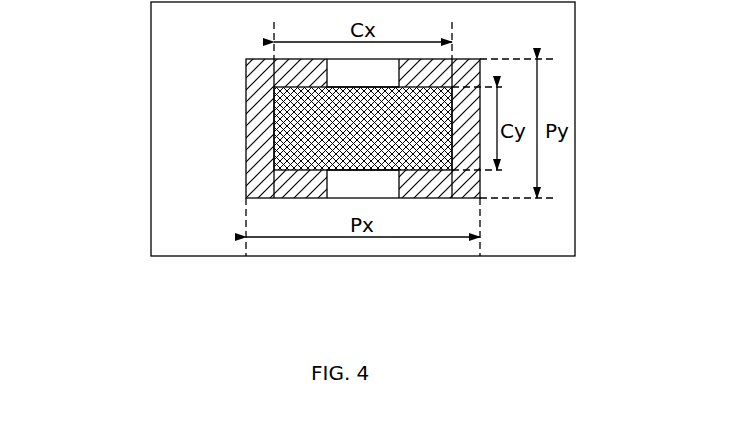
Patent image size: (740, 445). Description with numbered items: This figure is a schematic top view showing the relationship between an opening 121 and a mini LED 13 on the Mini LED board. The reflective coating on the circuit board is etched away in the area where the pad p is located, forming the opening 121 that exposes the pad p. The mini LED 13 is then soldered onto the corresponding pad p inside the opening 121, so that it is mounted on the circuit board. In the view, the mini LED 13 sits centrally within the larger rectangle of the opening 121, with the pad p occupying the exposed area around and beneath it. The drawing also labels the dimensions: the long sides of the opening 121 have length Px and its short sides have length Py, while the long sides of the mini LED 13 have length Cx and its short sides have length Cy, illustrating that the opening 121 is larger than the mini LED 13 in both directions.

The opening 121 is at (246, 130).
The mini LED 13 is at (348, 133).
The pad p is at (468, 143).